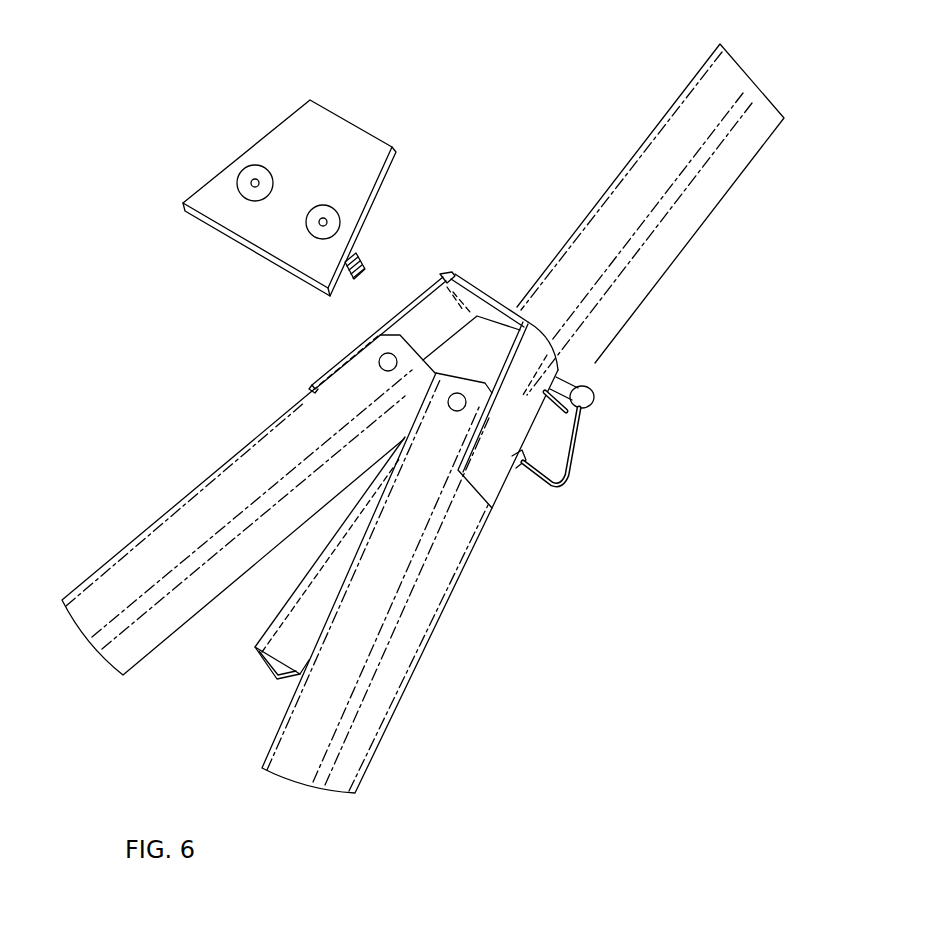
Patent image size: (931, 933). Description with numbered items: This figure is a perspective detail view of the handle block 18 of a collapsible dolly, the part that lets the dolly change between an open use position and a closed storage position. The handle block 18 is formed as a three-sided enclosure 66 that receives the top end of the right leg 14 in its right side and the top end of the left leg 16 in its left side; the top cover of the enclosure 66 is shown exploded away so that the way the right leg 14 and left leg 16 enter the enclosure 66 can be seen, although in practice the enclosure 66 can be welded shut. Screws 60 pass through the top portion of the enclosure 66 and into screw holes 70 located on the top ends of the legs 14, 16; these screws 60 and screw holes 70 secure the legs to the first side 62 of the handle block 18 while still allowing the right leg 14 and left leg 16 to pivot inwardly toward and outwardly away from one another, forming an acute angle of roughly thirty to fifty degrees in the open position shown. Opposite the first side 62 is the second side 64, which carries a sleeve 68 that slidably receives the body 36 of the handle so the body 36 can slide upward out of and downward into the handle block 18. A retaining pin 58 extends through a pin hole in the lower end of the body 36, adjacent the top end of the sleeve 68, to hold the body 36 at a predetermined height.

The right leg 14 is at (205, 505).
The left leg 16 is at (415, 630).
The handle block 18 is at (492, 298).
The body 36 is at (728, 163).
The retaining pin 58 is at (594, 402).
The screws 60 is at (253, 182).
The first side 62 is at (289, 229).
The second side 64 is at (550, 462).
The enclosure 66 is at (442, 272).
The sleeve 68 is at (523, 460).
The screw holes 70 is at (380, 363).